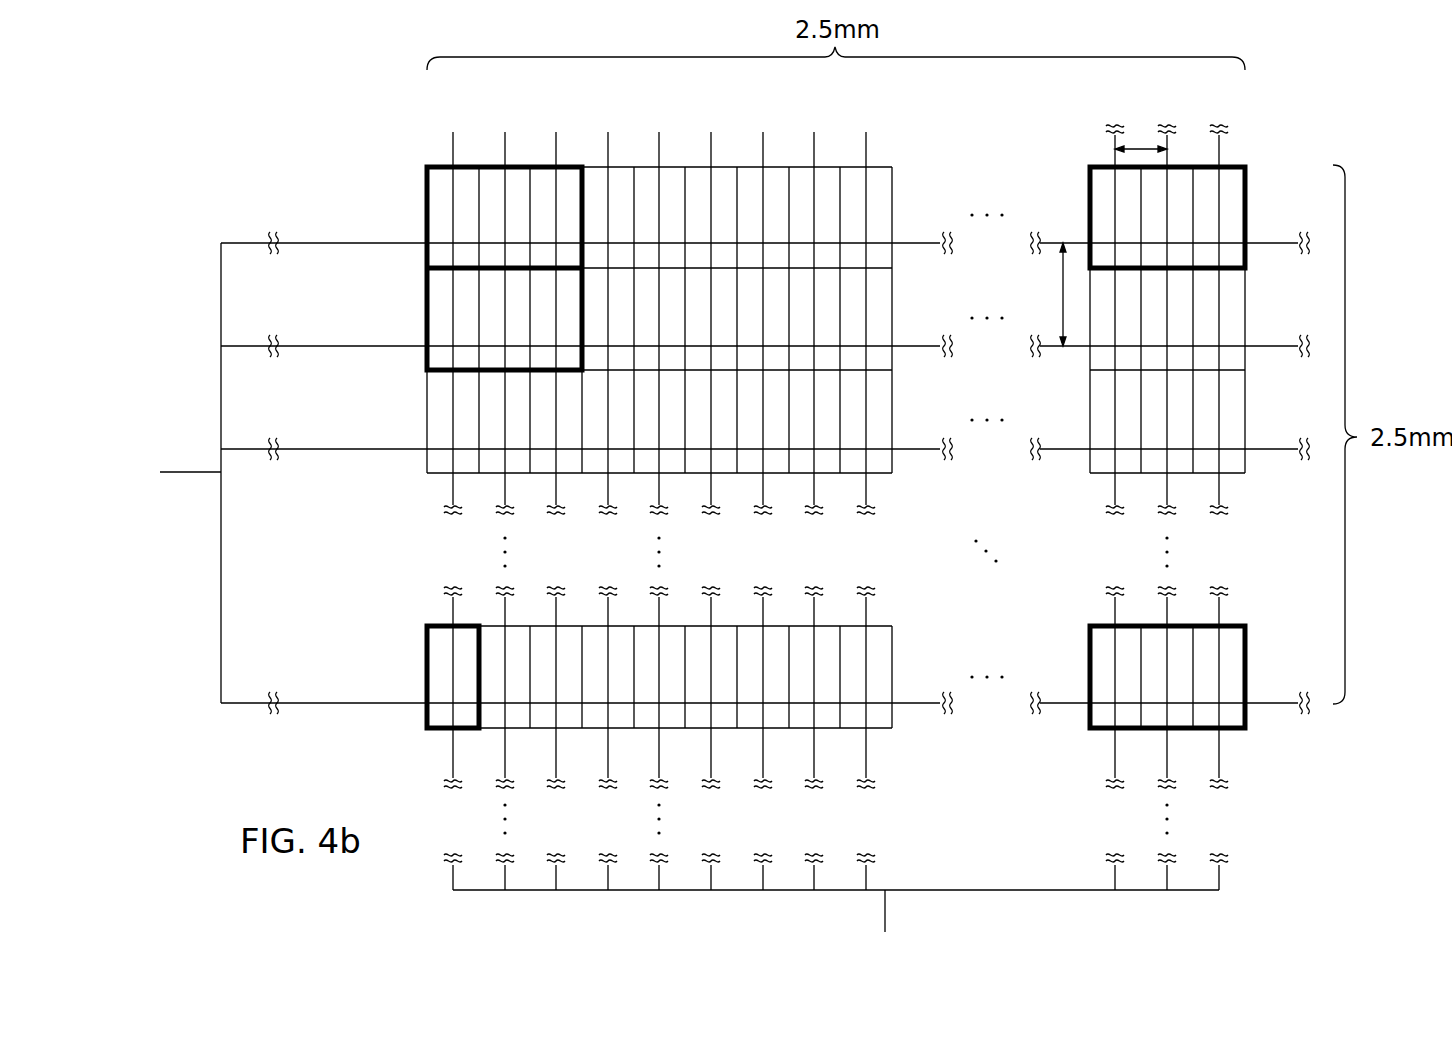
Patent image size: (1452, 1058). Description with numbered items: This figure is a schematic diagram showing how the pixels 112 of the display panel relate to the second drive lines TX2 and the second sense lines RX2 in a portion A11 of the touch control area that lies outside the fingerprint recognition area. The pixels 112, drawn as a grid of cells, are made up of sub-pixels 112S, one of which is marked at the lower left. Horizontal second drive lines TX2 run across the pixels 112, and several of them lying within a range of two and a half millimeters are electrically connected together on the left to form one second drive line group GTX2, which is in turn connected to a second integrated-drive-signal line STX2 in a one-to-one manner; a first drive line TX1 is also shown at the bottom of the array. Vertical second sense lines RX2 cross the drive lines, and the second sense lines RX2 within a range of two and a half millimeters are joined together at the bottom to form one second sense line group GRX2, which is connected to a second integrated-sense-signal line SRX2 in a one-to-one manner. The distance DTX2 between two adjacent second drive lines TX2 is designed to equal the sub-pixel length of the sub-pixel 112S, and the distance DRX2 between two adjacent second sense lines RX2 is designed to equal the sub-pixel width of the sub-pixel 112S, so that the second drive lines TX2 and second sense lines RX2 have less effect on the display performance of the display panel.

The pixels 112 is at (427, 195).
The sub-pixel 112S is at (427, 640).
The second drive lines TX2 is at (388, 245).
The first drive lines TX1 is at (427, 703).
The second sense lines RX2 is at (454, 134).
The second integrated-drive-signal lines STX2 is at (184, 475).
The second drive line groups GTX2 is at (232, 212).
The distance between adjacent two of the second drive lines DTX2 is at (1063, 296).
The distance between adjacent two of the second sense lines DRX2 is at (1141, 148).
The second integrated-sense-signal lines SRX2 is at (885, 915).
The second sense line groups GRX2 is at (1259, 818).
The portion of the touch control area A11 is at (181, 70).